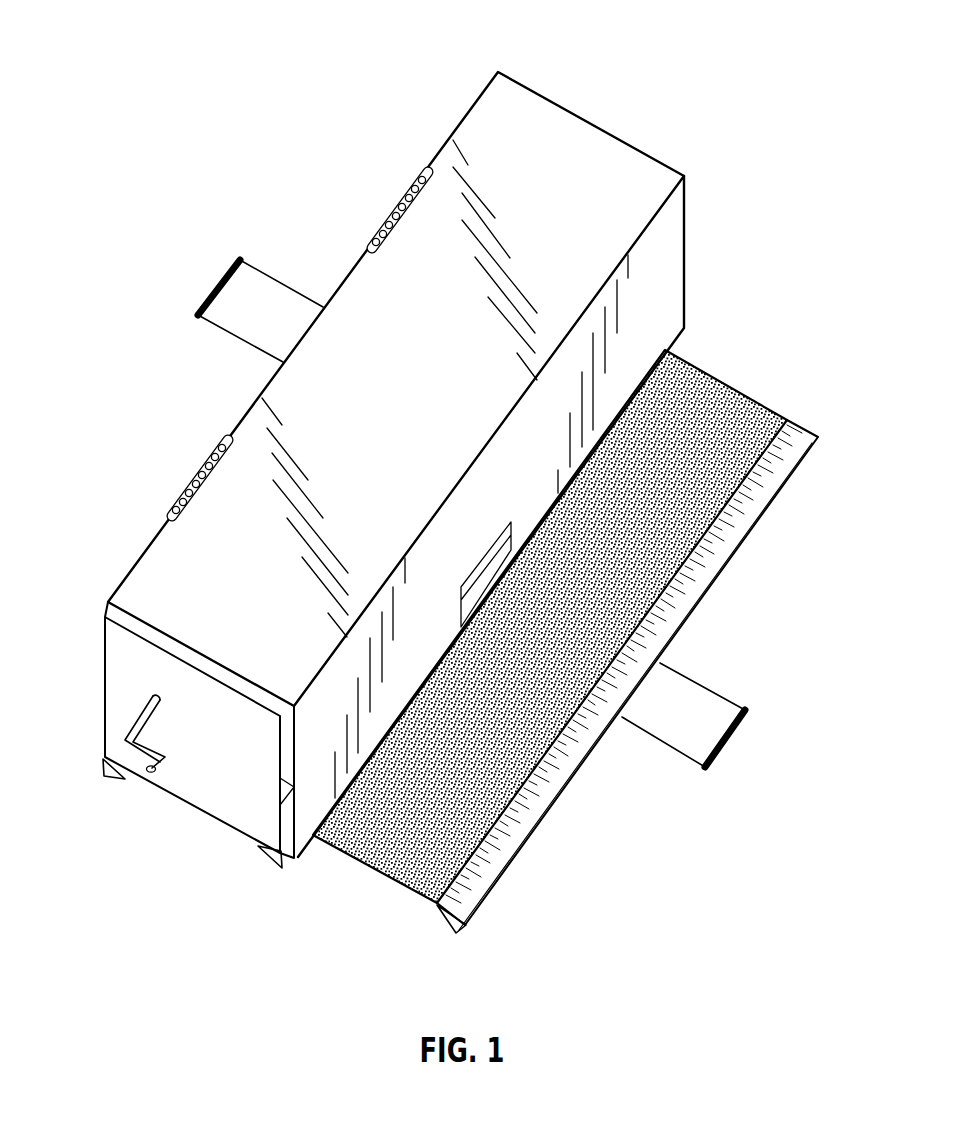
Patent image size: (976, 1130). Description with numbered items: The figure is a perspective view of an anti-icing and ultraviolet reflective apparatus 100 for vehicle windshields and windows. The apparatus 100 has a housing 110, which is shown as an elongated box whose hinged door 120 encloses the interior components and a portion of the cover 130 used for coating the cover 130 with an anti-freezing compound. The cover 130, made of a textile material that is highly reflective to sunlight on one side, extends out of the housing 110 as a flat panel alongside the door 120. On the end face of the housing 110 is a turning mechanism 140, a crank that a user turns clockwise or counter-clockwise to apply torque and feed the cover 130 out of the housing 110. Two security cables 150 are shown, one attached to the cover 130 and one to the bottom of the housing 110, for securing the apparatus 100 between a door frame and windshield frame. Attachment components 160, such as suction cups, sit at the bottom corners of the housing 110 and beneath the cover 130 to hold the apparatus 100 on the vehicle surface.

The anti-icing and ultraviolet reflective apparatus 100 is at (118, 80).
The housing 110 is at (105, 652).
The hinged door 120 is at (160, 551).
The cover 130 is at (732, 378).
The turning mechanism 140 is at (127, 742).
The security cables 150 is at (200, 311).
The attachment components 160 is at (103, 768).